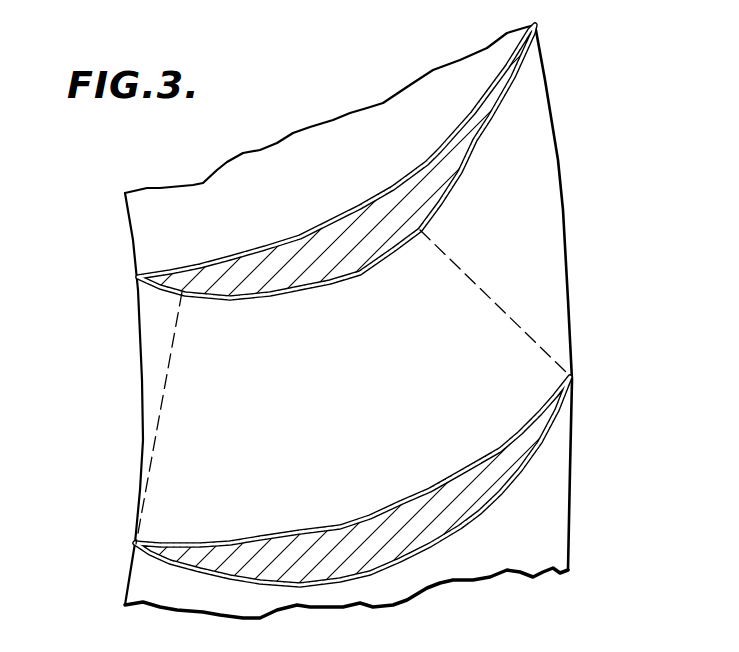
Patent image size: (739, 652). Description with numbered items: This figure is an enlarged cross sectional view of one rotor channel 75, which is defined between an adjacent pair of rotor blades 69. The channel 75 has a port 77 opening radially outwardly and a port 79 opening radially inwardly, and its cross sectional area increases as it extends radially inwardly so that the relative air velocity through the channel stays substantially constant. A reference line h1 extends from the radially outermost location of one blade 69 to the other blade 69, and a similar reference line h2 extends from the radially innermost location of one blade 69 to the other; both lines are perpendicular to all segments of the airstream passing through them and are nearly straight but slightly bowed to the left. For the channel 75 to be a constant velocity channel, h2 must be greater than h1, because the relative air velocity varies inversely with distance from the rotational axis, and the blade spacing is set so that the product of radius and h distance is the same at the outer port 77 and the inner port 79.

The rotor blade 69 is at (320, 253).
The rotor channel 75 is at (378, 445).
The port opening radially outwardly 77 is at (565, 210).
The port opening radially inwardly 79 is at (140, 431).
The reference line h1 is at (476, 283).
The reference line h2 is at (163, 362).